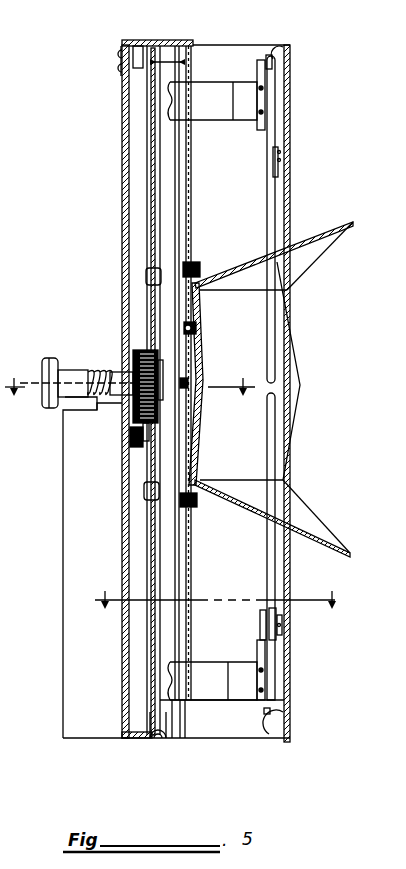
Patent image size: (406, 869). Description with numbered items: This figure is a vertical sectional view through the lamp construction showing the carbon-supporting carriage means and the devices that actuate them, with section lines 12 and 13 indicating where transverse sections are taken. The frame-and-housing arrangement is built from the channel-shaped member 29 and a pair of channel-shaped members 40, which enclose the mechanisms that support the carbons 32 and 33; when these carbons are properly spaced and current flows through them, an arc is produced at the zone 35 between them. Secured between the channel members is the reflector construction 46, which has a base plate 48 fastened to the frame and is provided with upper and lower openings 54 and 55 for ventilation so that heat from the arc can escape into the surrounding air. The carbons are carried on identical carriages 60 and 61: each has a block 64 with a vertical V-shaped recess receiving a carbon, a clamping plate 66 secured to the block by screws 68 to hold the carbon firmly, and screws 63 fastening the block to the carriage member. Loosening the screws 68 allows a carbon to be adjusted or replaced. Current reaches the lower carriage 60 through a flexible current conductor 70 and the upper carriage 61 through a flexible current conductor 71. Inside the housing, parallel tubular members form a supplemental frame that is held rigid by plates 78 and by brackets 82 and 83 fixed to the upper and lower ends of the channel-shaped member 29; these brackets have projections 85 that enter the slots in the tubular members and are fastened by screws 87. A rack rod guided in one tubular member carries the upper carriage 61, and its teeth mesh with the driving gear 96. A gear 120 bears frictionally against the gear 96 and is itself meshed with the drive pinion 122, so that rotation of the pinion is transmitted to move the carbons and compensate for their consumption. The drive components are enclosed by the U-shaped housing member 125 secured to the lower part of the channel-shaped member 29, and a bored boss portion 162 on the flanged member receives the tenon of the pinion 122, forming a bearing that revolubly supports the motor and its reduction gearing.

The section line 12- 12 is at (130, 397).
The section line 13- 13 is at (218, 612).
The channel-shaped member 29 is at (124, 252).
The carbon 32 is at (276, 331).
The carbon 33 is at (276, 458).
The zone 35 is at (277, 389).
The channel-shaped member 40 is at (289, 150).
The reflector construction 46 is at (306, 232).
The base plate 48 is at (193, 332).
The opening 54 is at (256, 254).
The opening 55 is at (259, 531).
The carriage 60 is at (222, 730).
The carriage 61 is at (243, 69).
The screws 63 is at (260, 690).
The block 64 is at (262, 660).
The clamping plate 66 is at (280, 621).
The screws 68 is at (283, 634).
The flexible current conductor 70 is at (264, 742).
The flexible current conductor 71 is at (279, 50).
The plates 78 is at (150, 278).
The bracket 82 is at (132, 42).
The bracket 83 is at (132, 736).
The projections 85 is at (166, 44).
The screws 87 is at (186, 62).
The driving gear 96 is at (160, 372).
The gear 120 is at (133, 360).
The pinion 122 is at (140, 458).
The housing member 125 is at (80, 730).
The boss portion 162 is at (132, 445).